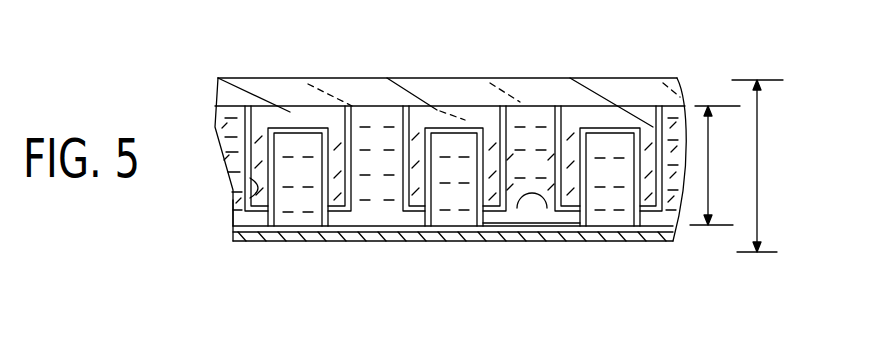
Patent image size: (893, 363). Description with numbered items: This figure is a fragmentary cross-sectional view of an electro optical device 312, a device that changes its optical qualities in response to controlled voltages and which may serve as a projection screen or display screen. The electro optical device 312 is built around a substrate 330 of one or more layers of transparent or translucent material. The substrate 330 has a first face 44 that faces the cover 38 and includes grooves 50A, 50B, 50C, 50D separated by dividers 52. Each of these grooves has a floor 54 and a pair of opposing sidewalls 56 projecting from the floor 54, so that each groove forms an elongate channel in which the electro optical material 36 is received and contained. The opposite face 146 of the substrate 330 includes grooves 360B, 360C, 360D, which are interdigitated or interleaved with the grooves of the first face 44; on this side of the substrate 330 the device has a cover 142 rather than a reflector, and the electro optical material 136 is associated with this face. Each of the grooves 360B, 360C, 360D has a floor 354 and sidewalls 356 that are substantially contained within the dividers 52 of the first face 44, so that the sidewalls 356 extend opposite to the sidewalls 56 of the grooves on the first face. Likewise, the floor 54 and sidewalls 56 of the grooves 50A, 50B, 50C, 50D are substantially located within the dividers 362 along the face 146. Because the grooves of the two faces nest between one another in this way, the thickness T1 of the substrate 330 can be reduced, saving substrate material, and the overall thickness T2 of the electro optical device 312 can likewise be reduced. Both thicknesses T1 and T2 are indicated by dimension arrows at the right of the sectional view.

The electro optical device 312 is at (218, 78).
The cover 38 is at (453, 88).
The floor 354 is at (442, 113).
The first face 44 is at (644, 105).
The groove 50A is at (219, 115).
The groove 50B is at (388, 118).
The groove 50C is at (533, 117).
The groove 50D is at (680, 110).
The sidewalls 56 is at (361, 118).
The dividers 52 is at (273, 153).
The sidewalls 356 is at (290, 133).
The groove 360B is at (292, 226).
The groove 360C is at (453, 226).
The groove 360D is at (600, 226).
The electro optical material 36 is at (532, 118).
The floor 54 is at (522, 206).
The dividers 362 is at (370, 222).
The electro optical material 136 is at (470, 223).
The cover 142 is at (232, 235).
The face 146 is at (384, 236).
The substrate 330 is at (233, 217).
The thickness of substrate T1 is at (715, 165).
The overall thickness of electro optical device T2 is at (760, 166).